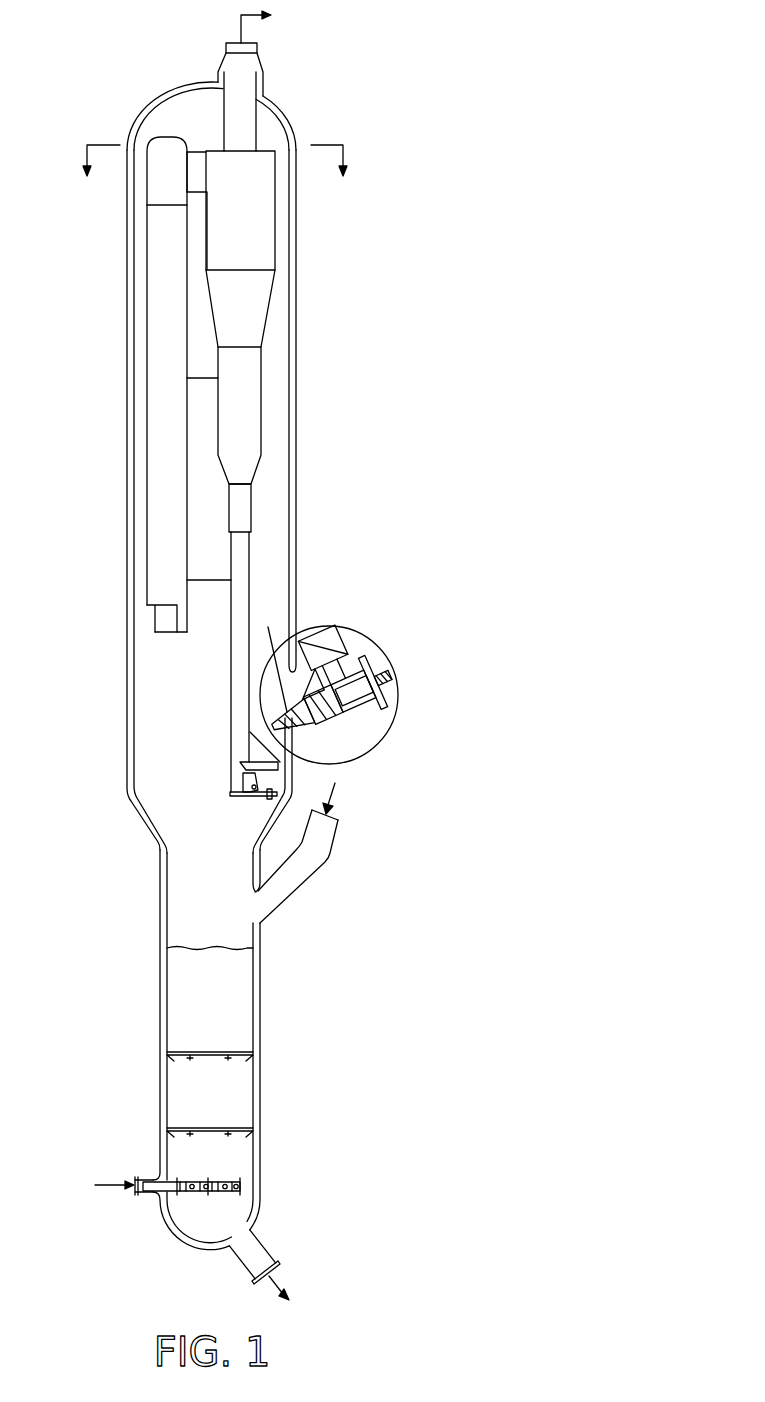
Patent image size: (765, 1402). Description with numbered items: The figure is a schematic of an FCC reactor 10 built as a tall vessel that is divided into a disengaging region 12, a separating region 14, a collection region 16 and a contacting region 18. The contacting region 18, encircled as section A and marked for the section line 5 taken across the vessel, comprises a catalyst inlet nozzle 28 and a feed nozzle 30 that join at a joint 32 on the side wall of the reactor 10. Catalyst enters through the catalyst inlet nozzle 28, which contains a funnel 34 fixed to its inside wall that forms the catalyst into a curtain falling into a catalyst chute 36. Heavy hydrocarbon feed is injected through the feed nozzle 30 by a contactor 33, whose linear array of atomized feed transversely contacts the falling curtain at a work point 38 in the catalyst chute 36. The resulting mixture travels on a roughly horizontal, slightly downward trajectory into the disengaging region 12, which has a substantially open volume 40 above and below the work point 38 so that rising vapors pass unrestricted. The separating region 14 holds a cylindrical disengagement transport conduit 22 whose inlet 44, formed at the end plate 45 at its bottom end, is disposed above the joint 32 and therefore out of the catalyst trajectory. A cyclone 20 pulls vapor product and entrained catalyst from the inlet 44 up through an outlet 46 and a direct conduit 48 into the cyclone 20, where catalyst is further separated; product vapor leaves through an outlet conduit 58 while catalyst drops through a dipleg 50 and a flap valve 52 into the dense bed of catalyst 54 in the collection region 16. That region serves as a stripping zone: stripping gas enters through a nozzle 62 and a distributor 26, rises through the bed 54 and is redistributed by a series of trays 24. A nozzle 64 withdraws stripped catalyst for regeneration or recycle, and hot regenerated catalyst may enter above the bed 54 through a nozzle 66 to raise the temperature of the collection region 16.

The reactor 10 is at (100, 491).
The disengaging region 12 is at (193, 727).
The separating region 14 is at (275, 326).
The collection region 16 is at (187, 1020).
The contacting region 18 is at (290, 728).
The cyclone 20 is at (263, 228).
The disengagement transport conduit 22 is at (157, 328).
The trays 24 is at (240, 1057).
The distributor 26 is at (193, 1188).
The catalyst inlet nozzle 28 is at (340, 655).
The feed nozzle 30 is at (357, 682).
The joint 32 is at (362, 658).
The contactor 33 is at (340, 710).
The funnel 34 is at (305, 695).
The catalyst chute 36 is at (268, 627).
The work point 38 is at (317, 717).
The open volume 40 is at (162, 692).
The inlet 44 is at (166, 620).
The end plate 45 is at (166, 633).
The outlet 46 is at (187, 176).
The direct conduit 48 is at (197, 163).
The dipleg 50 is at (228, 748).
The flap valve 52 is at (235, 797).
The dense bed of catalyst 54 is at (182, 947).
The outlet conduit 58 is at (245, 113).
The nozzle 62 is at (148, 1197).
The nozzle 64 is at (250, 1252).
The nozzle 66 is at (305, 867).
The section line 5- 5 is at (215, 160).
The section A is at (360, 627).